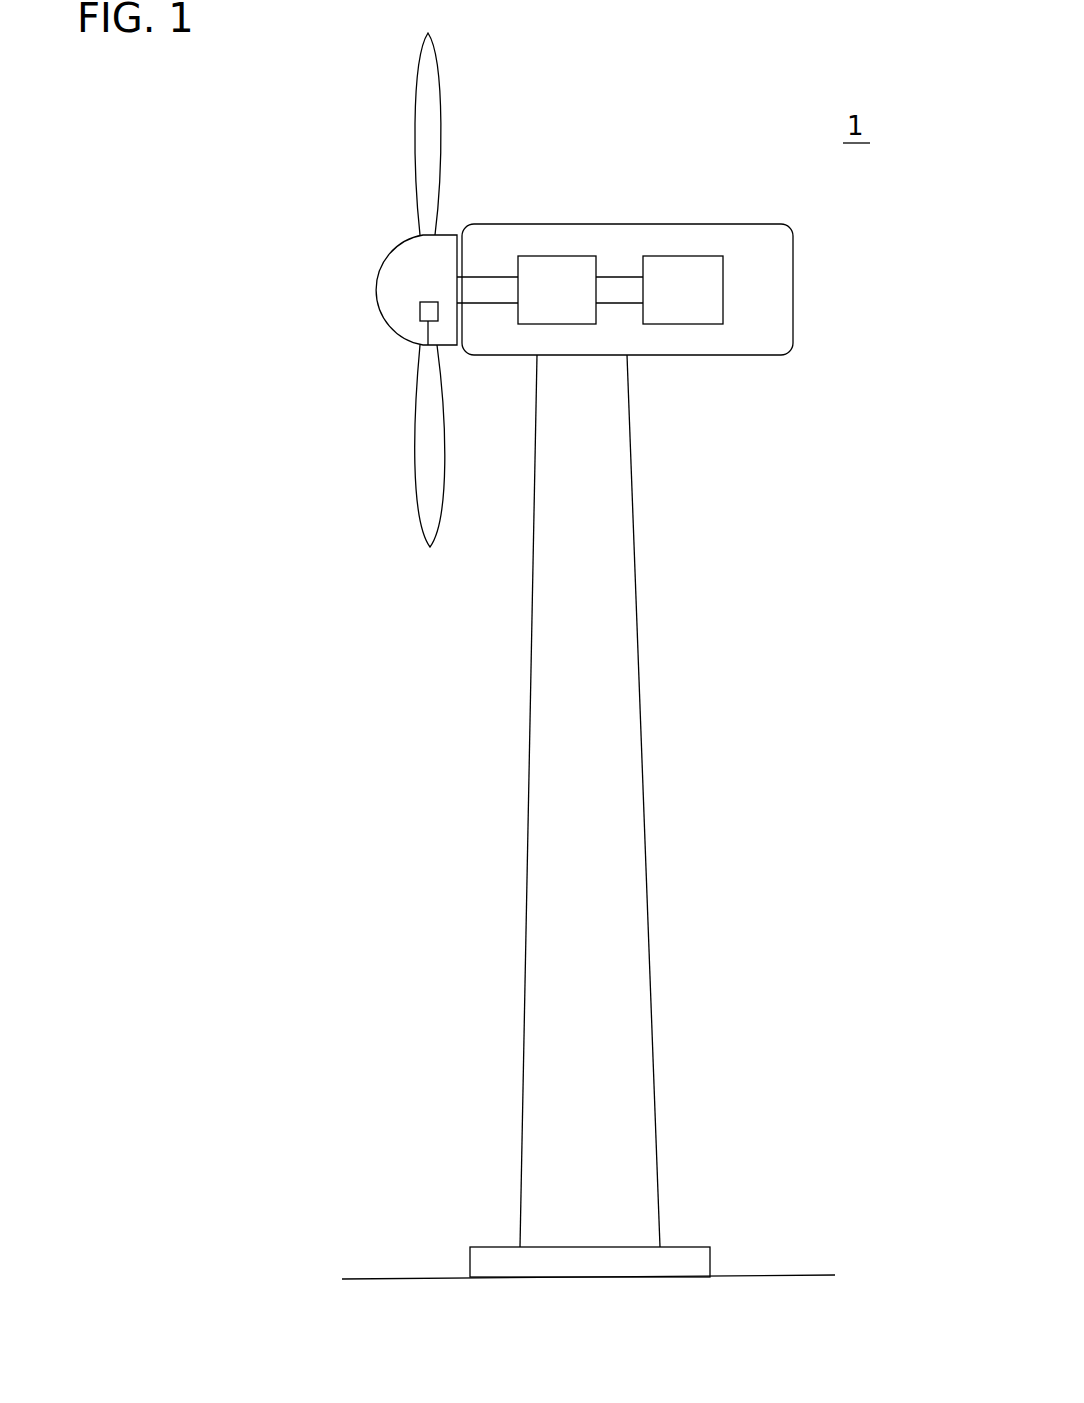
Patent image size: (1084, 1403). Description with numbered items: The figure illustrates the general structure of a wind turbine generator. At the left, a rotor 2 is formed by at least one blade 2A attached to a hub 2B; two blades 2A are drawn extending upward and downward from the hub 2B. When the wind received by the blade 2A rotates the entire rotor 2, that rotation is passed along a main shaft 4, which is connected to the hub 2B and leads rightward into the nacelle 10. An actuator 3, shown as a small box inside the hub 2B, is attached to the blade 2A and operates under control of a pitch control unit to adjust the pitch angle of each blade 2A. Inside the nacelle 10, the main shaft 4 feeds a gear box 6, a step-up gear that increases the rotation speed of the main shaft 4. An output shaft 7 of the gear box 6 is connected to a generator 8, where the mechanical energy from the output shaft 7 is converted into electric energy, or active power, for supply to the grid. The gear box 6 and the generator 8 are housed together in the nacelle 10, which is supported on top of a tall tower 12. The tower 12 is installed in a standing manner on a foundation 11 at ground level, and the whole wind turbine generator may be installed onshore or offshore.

The rotor 2 is at (262, 148).
The blade 2A is at (413, 105).
The hub 2B is at (388, 326).
The actuator 3 is at (420, 310).
The main shaft 4 is at (485, 283).
The gear box 6 is at (550, 270).
The output shaft 7 is at (622, 283).
The generator 8 is at (680, 270).
The nacelle 10 is at (738, 224).
The foundation 11 is at (678, 1247).
The tower 12 is at (626, 780).